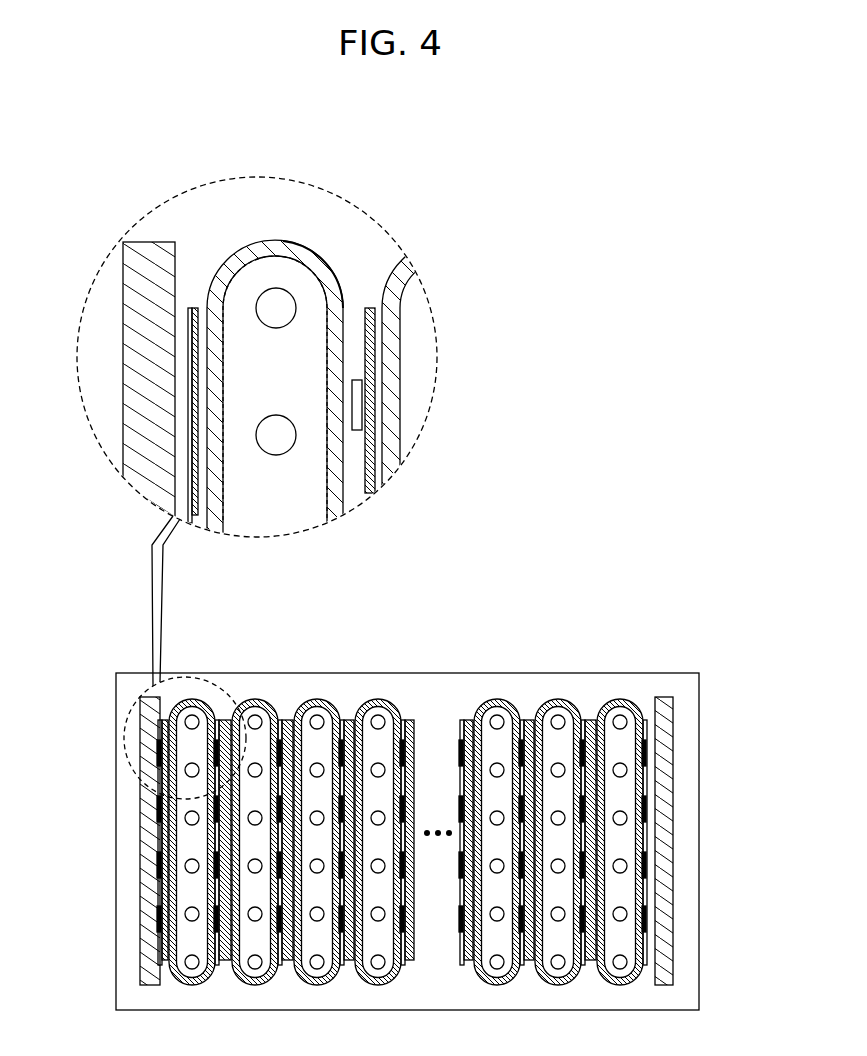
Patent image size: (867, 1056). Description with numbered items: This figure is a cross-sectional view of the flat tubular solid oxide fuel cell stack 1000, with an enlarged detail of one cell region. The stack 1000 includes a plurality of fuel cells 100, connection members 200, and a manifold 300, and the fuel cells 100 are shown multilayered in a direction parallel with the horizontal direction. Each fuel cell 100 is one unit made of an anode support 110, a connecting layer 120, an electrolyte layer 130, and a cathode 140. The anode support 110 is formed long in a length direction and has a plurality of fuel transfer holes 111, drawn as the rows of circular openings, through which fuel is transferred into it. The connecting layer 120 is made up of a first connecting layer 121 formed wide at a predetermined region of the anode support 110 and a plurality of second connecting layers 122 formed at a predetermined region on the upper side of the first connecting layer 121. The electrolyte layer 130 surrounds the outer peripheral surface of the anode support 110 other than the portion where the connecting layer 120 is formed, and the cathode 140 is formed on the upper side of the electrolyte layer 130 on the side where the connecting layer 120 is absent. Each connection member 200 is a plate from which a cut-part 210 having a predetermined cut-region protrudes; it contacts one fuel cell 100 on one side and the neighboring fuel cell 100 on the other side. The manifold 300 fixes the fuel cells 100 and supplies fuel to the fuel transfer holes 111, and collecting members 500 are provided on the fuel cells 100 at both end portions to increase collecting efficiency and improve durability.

The flat tubular solid oxide fuel cell stack 1000 is at (405, 725).
The fuel cell 100 is at (323, 686).
The anode support 110 is at (257, 272).
The fuel transfer hole 111 is at (277, 292).
The connecting layer 120 is at (267, 440).
The first connecting layer 121 is at (217, 517).
The second connecting layer 122 is at (202, 525).
The electrolyte layer 130 is at (312, 258).
The cathode 140 is at (352, 378).
The connection member 200 is at (190, 294).
The cut-part 210 is at (188, 398).
The manifold 300 is at (432, 687).
The collecting member 500 is at (140, 865).